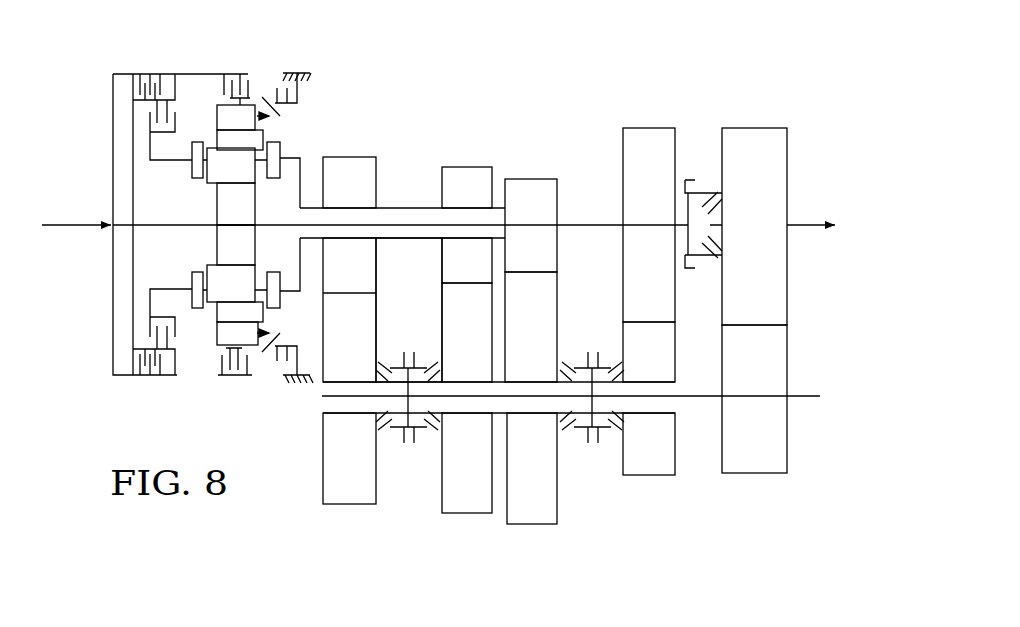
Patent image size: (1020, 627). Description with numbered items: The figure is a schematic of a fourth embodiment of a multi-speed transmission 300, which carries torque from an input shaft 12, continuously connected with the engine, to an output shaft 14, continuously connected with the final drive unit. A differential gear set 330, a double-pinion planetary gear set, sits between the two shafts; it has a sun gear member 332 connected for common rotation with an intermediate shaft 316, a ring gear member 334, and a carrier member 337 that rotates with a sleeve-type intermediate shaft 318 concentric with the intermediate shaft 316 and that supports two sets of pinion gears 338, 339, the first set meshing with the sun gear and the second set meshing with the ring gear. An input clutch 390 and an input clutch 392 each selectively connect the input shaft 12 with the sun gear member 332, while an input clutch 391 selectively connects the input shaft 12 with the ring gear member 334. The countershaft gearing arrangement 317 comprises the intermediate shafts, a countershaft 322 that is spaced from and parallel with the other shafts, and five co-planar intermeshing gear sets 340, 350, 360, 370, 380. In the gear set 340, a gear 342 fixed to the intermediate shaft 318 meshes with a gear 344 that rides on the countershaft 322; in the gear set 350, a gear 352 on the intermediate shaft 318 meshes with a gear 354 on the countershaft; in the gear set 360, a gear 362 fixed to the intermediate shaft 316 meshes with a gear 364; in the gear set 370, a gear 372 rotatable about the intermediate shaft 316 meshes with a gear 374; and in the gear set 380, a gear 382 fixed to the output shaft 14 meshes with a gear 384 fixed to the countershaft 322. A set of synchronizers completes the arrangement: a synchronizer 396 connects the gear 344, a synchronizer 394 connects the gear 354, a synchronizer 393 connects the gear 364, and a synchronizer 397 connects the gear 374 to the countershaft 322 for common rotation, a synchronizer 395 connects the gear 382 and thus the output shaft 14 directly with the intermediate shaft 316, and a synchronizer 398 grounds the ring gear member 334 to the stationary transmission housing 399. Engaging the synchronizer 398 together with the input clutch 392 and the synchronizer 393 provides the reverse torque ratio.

The input shaft 12 is at (58, 226).
The output shaft 14 is at (820, 226).
The multi-speed transmission 300 is at (798, 100).
The intermediate shaft 316 is at (192, 226).
The countershaft gearing arrangement 317 is at (524, 65).
The intermediate shaft 318 is at (410, 208).
The countershaft 322 is at (707, 398).
The differential gear set 330 is at (213, 377).
The sun gear member 332 is at (215, 248).
The ring gear member 334 is at (215, 328).
The carrier member 337 is at (190, 163).
The pinion gears 338 is at (257, 182).
The pinion gears 339 is at (215, 133).
The gear set 340 is at (347, 518).
The gear 342 is at (376, 172).
The gear 344 is at (377, 303).
The gear set 350 is at (465, 520).
The gear 352 is at (492, 175).
The gear 354 is at (442, 335).
The gear set 360 is at (533, 533).
The gear 362 is at (558, 190).
The gear 364 is at (558, 308).
The gear set 370 is at (652, 483).
The gear 372 is at (623, 130).
The gear 374 is at (675, 357).
The gear set 380 is at (758, 483).
The gear 382 is at (788, 178).
The gear 384 is at (788, 433).
The input clutch 390 is at (111, 93).
The input clutch 391 is at (259, 82).
The input clutch 392 is at (132, 122).
The synchronizer 393 is at (571, 444).
The synchronizer 394 is at (427, 444).
The synchronizer 395 is at (705, 181).
The synchronizer 396 is at (389, 444).
The synchronizer 397 is at (610, 444).
The synchronizer 398 is at (288, 113).
The stationary transmission housing 399 is at (307, 63).